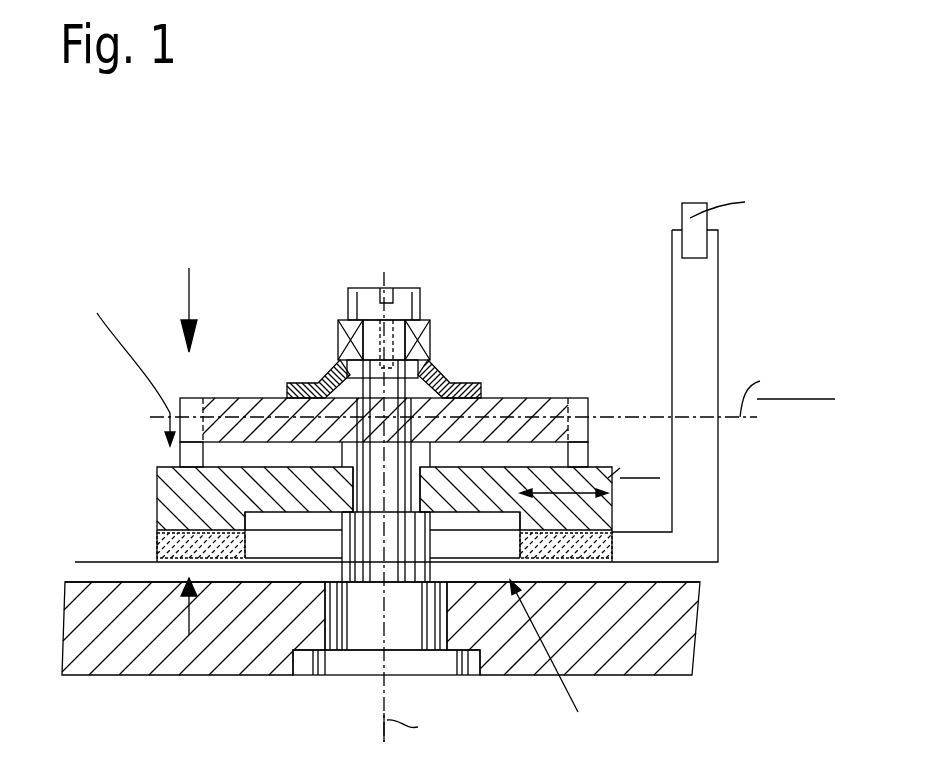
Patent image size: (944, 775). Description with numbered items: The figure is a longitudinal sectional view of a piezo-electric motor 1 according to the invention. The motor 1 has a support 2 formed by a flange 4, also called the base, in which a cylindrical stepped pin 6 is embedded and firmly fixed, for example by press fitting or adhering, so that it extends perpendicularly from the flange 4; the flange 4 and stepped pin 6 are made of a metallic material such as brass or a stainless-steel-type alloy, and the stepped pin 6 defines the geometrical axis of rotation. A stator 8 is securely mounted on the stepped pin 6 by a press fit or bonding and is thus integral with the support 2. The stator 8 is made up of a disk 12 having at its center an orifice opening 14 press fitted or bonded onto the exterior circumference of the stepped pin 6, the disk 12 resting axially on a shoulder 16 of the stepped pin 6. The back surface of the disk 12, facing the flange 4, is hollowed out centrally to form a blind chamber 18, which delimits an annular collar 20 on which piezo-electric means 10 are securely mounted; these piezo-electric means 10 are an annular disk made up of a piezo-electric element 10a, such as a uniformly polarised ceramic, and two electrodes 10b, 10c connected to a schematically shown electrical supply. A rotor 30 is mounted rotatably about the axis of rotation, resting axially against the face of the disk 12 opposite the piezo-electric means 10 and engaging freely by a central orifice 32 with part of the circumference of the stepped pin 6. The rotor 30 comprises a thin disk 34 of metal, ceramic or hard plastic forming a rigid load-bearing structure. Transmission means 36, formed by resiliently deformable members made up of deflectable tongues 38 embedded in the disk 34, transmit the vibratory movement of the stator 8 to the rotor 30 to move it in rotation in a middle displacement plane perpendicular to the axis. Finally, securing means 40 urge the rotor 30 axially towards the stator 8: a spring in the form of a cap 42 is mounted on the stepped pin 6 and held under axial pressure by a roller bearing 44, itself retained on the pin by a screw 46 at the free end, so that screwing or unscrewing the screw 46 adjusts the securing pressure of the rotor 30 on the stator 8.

The piezo-electric motor 1 is at (597, 176).
The support 2 is at (684, 694).
The flange 4 is at (605, 632).
The stepped pin 6 is at (360, 622).
The stator 8 is at (130, 484).
The piezo-electric means 10 is at (636, 547).
The piezo-electric element 10a is at (157, 547).
The electrode 10b is at (157, 535).
The electrode 10c is at (75, 562).
The disk 12 is at (592, 473).
The orifice opening 14 is at (413, 460).
The shoulder 16 is at (345, 493).
The chamber 18 is at (478, 518).
The annular collar 20 is at (570, 510).
The rotor 30 is at (563, 364).
The central orifice 32 is at (432, 375).
The thin disk 34 is at (265, 398).
The transmission means 36 is at (160, 452).
The deflectable tongues 38 is at (578, 457).
The securing means 40 is at (452, 272).
The cap spring 42 is at (323, 377).
The roller bearing 44 is at (338, 360).
The screw 46 is at (393, 297).